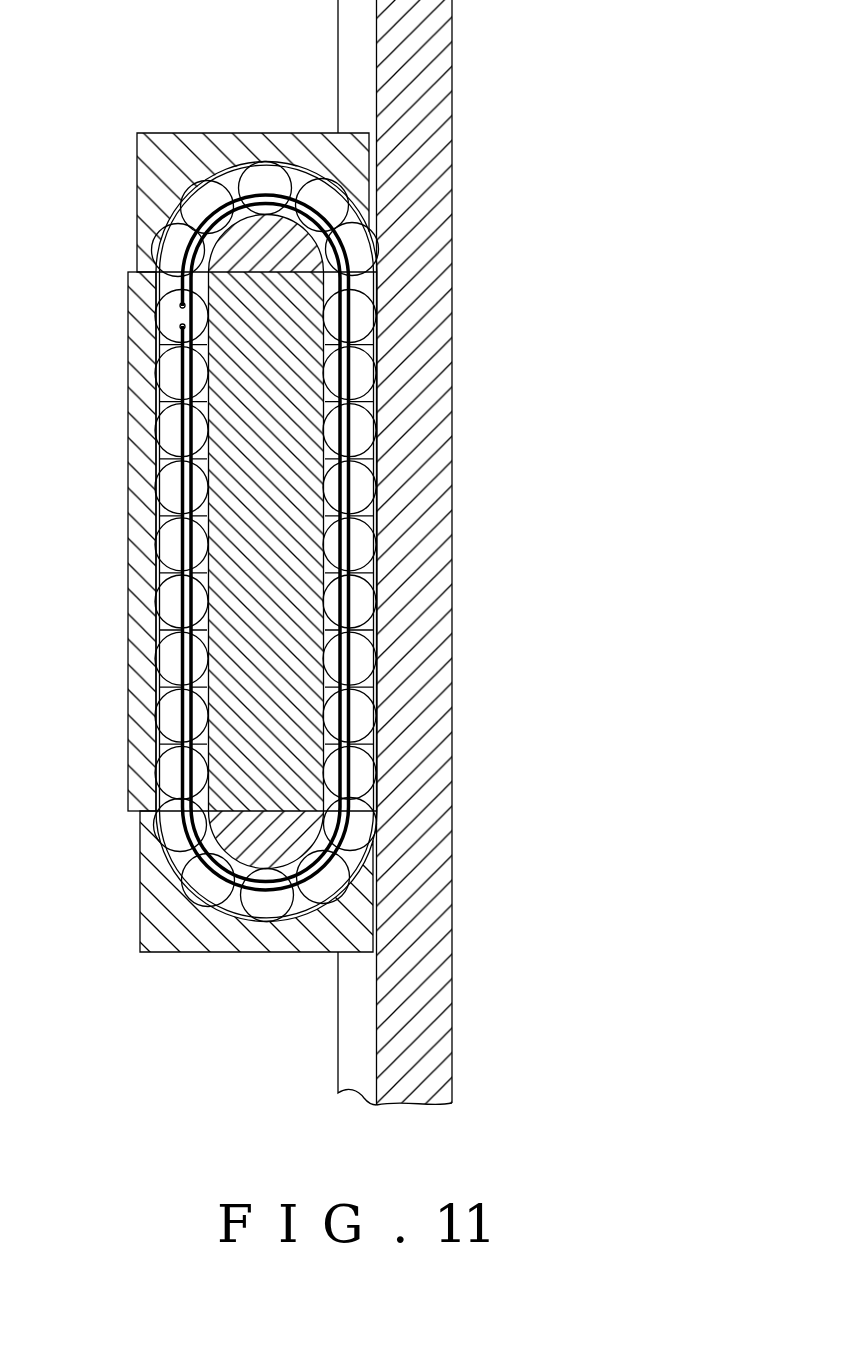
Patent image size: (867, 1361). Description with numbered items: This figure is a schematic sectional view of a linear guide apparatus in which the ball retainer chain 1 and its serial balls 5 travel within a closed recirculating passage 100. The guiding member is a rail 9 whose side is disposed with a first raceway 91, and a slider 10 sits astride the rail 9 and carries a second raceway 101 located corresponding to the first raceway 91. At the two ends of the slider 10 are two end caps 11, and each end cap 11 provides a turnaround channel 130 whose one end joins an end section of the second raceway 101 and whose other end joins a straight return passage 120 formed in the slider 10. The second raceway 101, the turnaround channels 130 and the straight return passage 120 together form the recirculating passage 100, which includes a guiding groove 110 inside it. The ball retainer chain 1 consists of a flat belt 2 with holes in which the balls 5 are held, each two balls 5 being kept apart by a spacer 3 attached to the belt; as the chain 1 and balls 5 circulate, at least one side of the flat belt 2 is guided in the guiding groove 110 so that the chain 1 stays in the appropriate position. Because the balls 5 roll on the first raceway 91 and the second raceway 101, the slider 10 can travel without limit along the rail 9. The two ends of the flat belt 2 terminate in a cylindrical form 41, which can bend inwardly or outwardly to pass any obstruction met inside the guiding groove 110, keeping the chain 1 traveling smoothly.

The ball retainer chain 1 is at (373, 627).
The flat belt 2 is at (183, 417).
The spacers 3 is at (362, 683).
The balls 5 is at (363, 722).
The rail 9 is at (418, 313).
The first raceway 91 is at (357, 97).
The slider 10 is at (245, 543).
The end caps 11 is at (225, 148).
The recirculating passage 100 is at (157, 743).
The second raceway 101 is at (328, 515).
The guiding groove 110 is at (182, 317).
The straight return passage 120 is at (207, 456).
The turnaround channel 130 is at (228, 177).
The cylindrical form 41 is at (182, 304).